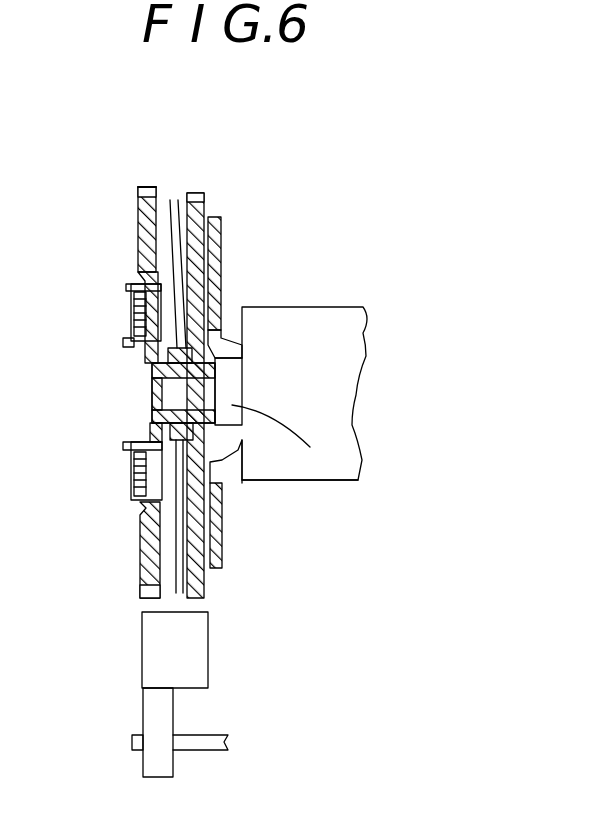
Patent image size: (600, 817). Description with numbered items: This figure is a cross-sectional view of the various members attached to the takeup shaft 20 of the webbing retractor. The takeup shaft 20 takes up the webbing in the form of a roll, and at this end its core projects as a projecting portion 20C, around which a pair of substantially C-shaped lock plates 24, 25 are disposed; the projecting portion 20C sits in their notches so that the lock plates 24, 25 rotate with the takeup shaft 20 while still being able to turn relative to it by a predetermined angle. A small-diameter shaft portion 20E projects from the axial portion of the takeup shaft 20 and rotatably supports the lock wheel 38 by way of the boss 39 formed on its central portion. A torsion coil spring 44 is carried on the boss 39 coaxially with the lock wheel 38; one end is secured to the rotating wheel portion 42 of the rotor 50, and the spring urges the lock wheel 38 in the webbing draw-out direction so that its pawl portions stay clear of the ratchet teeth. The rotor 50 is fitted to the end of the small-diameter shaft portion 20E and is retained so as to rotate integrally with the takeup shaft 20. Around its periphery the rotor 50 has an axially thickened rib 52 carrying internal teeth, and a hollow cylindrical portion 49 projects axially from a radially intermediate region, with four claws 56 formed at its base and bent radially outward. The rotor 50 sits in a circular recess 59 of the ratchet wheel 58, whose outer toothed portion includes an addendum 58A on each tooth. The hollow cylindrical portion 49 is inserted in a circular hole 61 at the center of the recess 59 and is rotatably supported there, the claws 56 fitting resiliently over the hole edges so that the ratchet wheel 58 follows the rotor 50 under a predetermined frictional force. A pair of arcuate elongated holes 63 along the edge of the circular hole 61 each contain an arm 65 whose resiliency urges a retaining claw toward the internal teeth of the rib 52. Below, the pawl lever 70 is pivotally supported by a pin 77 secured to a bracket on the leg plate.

The takeup shaft 20 is at (353, 484).
The projecting portion 20C is at (217, 323).
The small-diameter shaft portion 20E is at (334, 488).
The lock plate 24 is at (221, 245).
The lock plate 25 is at (225, 545).
The lock wheel 38 is at (206, 195).
The boss 39 is at (170, 428).
The rotating wheel portion 42 is at (240, 375).
The torsion coil spring 44 is at (171, 200).
The hollow cylindrical portion 49 is at (152, 366).
The rotor 50 is at (142, 588).
The rib 52 is at (140, 516).
The claw 56 is at (123, 343).
The ratchet wheel 58 is at (136, 186).
The addendum 58A is at (150, 187).
The circular recess 59 is at (172, 250).
The circular hole 61 is at (150, 433).
The elongated hole 63 is at (150, 336).
The arm 65 is at (131, 302).
The pawl lever 70 is at (212, 647).
The pin 77 is at (207, 748).